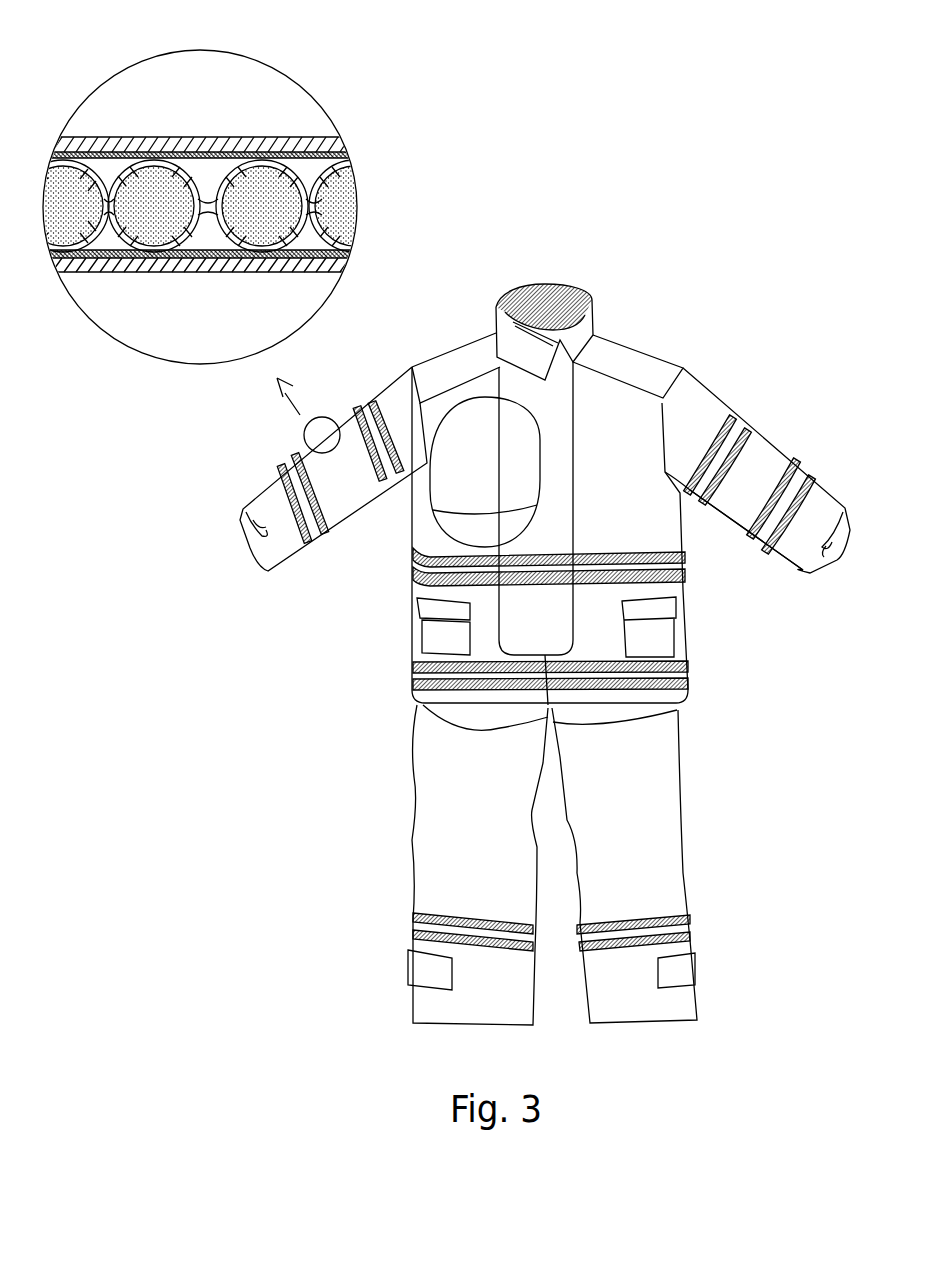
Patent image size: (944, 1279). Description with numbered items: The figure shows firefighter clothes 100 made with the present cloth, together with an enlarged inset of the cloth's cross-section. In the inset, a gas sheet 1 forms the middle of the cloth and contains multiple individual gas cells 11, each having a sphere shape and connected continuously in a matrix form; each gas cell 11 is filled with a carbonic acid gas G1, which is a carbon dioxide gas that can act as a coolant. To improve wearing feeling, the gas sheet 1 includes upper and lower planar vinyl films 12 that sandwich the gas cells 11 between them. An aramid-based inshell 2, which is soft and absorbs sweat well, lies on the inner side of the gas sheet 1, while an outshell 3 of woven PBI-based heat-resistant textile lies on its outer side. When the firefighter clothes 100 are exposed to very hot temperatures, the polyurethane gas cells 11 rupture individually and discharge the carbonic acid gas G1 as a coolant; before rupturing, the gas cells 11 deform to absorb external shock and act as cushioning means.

The firefighter clothes 100 is at (690, 368).
The gas sheet 1 is at (277, 143).
The gas cell 11 is at (148, 262).
The planar vinyl film 12 is at (185, 143).
The inshell 2 is at (214, 274).
The outshell 3 is at (121, 143).
The carbonic acid gas G1 is at (297, 187).